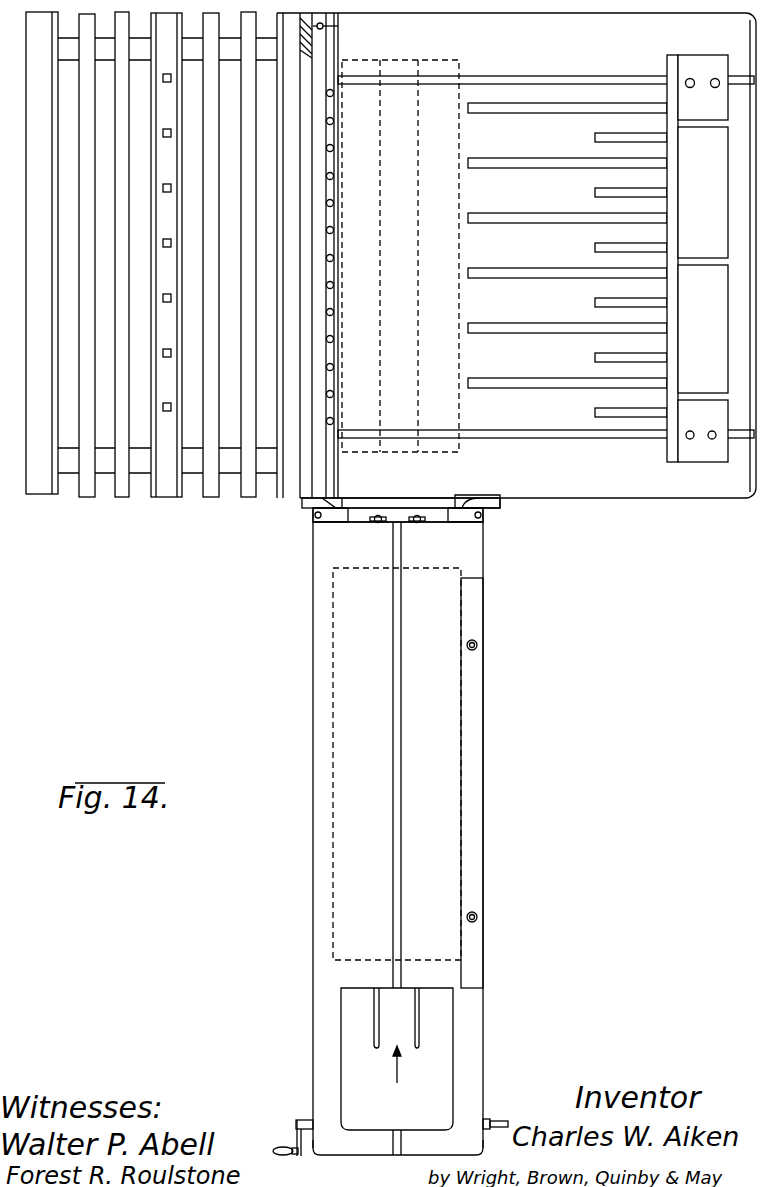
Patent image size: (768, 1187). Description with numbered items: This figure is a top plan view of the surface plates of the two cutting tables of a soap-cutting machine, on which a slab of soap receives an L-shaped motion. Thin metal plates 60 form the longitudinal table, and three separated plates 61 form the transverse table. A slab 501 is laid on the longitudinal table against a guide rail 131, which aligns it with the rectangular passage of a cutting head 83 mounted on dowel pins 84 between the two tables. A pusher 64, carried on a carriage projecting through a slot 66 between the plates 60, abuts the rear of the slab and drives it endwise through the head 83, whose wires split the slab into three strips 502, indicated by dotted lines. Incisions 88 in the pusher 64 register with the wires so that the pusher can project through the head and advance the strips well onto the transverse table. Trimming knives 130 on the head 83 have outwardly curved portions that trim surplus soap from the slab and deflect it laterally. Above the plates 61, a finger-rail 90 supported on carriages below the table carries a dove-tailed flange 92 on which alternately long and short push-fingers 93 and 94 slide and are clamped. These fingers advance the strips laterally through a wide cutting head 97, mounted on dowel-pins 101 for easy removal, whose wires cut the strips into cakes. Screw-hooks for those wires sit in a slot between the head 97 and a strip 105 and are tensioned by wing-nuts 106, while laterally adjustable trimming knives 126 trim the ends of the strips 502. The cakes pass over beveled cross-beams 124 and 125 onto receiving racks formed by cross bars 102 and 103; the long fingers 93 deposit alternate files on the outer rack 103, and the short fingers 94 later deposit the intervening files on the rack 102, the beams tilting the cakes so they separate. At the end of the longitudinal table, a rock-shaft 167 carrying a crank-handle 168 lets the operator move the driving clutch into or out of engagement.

The surface plates of the longitudinal cutting table 60 is at (316, 973).
The surface plates of the transverse cutting table 61 is at (628, 506).
The pusher 64 is at (397, 1059).
The slot 66 is at (402, 795).
The cutting head 83 is at (440, 524).
The dowel pins 84 is at (312, 516).
The incisions 88 is at (374, 1020).
The finger-rail 90 is at (696, 58).
The dove-tailed flange 92 is at (667, 68).
The long push-fingers 93 is at (499, 104).
The short push-fingers 94 is at (596, 138).
The wide cutting head 97 is at (322, 405).
The dowel-pins 101 is at (324, 27).
The cross bars of receiving rack 102 is at (171, 269).
The cross bars of receiving rack 103 is at (38, 269).
The strip 105 is at (334, 302).
The wing-nuts 106 is at (333, 203).
The cross-beam 124 is at (277, 458).
The cross-beam 125 is at (182, 457).
The trimming knives 126 is at (305, 42).
The trimming knives 130 is at (358, 494).
The rail 131 is at (484, 790).
The rock-shaft 167 is at (497, 1118).
The crank-handle 168 is at (292, 1150).
The slab 501 is at (333, 795).
The strips 502 is at (437, 60).